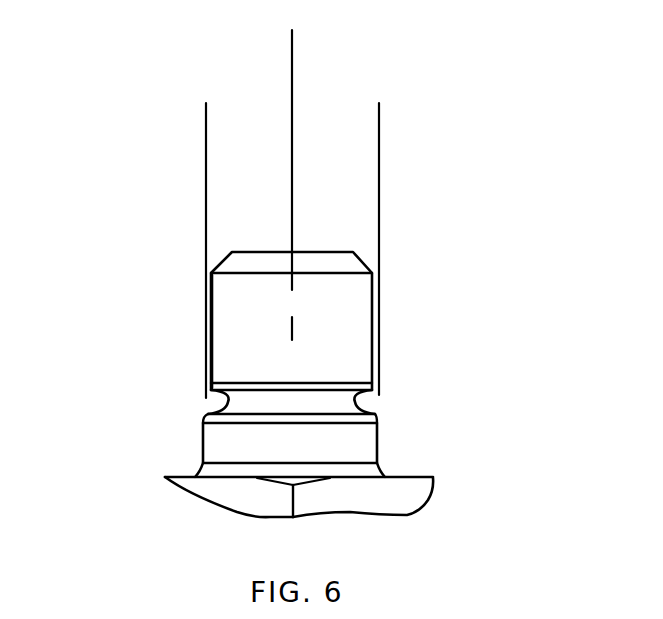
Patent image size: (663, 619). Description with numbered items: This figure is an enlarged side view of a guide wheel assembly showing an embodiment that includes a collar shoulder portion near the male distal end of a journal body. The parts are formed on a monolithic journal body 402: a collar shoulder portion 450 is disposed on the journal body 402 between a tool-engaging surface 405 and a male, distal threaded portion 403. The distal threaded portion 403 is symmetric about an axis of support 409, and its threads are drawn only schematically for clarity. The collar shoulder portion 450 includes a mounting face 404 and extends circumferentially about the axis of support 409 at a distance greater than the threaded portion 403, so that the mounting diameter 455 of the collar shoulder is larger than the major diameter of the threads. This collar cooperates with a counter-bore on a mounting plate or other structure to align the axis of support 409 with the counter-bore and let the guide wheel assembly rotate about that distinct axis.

The axis of support 409 is at (292, 52).
The mounting diameter 455 is at (153, 129).
The monolithic journal body 402 is at (257, 252).
The distal threaded portion 403 is at (225, 322).
The collar shoulder portion 450 is at (385, 412).
The mounting face 404 is at (410, 477).
The tool-engaging surface 405 is at (407, 502).